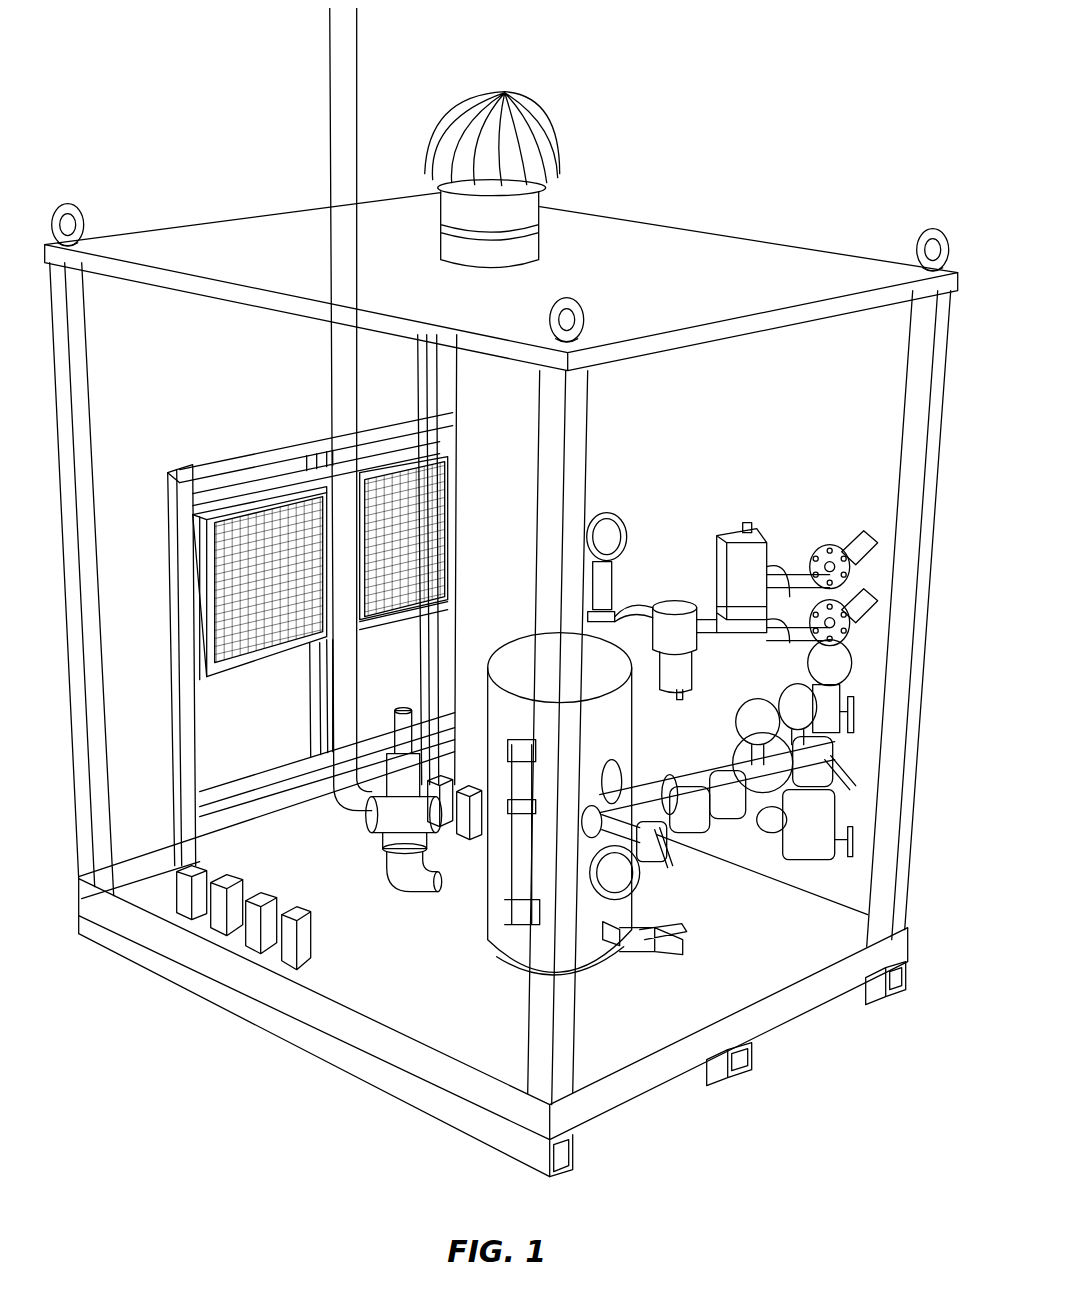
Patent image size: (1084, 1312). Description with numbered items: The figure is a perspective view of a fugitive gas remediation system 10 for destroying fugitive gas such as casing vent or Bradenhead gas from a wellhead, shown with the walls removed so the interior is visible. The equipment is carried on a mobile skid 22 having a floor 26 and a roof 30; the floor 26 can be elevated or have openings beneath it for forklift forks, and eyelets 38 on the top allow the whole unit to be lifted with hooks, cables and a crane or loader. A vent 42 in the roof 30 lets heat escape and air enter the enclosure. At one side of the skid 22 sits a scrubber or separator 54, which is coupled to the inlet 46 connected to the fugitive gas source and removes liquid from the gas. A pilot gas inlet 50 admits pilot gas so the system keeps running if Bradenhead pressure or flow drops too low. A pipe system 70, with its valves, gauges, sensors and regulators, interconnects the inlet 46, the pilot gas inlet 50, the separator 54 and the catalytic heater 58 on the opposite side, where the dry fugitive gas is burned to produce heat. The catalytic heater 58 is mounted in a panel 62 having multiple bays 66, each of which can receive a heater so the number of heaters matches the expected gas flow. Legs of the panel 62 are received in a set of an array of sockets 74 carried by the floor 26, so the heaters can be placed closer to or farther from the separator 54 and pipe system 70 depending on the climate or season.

The fugitive gas remediation (FGR) system 10 is at (300, 1079).
The mobile skid 22 is at (842, 262).
The floor 26 is at (637, 1085).
The roof 30 is at (227, 230).
The eyelets 38 is at (68, 203).
The vent 42 is at (551, 118).
The inlet 46 is at (820, 862).
The pilot gas inlet 50 is at (514, 927).
The separator 54 is at (512, 670).
The catalytic heater 58 is at (260, 525).
The panel 62 is at (182, 687).
The bays 66 is at (193, 586).
The pipe system 70 is at (712, 840).
The array of sockets 74 is at (252, 936).